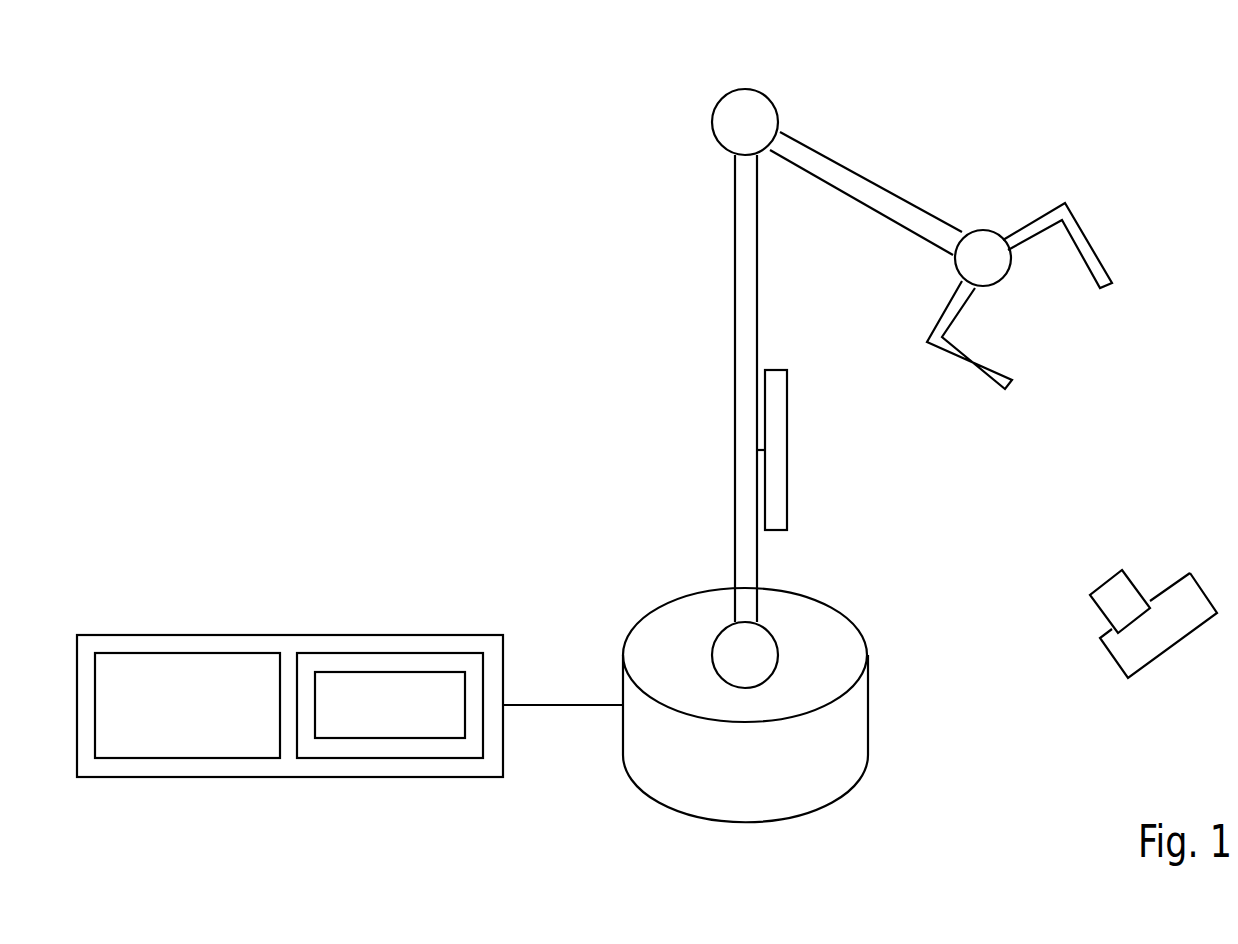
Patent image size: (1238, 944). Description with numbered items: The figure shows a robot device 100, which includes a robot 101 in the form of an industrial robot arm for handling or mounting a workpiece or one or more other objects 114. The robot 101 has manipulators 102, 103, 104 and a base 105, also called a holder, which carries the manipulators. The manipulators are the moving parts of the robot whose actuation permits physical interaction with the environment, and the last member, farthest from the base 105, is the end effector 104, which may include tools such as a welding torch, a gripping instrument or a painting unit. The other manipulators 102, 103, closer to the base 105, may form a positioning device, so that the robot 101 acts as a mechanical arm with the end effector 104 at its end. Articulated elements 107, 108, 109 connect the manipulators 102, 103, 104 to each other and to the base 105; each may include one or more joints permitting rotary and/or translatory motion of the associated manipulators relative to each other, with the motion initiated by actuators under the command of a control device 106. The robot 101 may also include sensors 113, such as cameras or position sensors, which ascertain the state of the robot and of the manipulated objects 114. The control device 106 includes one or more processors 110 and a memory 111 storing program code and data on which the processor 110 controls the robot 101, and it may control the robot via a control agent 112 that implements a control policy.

The robot device 100 is at (1117, 137).
The robot 101 is at (703, 321).
The manipulator 102 is at (743, 430).
The manipulator 103 is at (875, 190).
The end effector 104 is at (1087, 248).
The base 105 is at (853, 723).
The control device 106 is at (287, 635).
The articulated element 107 is at (728, 642).
The articulated element 108 is at (720, 125).
The articulated element 109 is at (983, 240).
The processor 110 is at (209, 653).
The memory 111 is at (375, 653).
The control agent 112 is at (422, 672).
The sensor 113 is at (788, 473).
The object 114 is at (1168, 583).